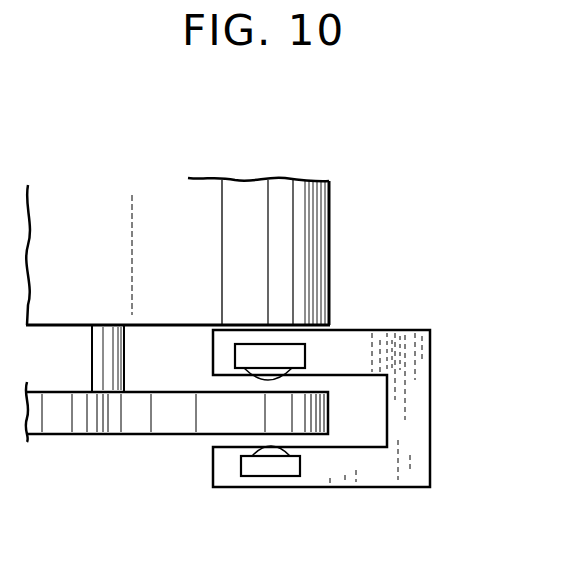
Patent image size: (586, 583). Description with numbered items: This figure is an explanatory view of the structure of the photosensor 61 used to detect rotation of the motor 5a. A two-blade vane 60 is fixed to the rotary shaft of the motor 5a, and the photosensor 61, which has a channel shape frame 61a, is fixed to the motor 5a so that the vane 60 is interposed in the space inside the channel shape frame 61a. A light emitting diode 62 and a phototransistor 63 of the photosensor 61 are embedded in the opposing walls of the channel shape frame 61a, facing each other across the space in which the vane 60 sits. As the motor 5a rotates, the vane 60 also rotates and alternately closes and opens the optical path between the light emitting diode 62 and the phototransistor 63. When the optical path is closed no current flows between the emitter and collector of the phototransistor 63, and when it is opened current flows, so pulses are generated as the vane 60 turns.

The motor 5a is at (260, 185).
The two-blade vane 60 is at (163, 420).
The photosensor 61 is at (430, 413).
The channel shape frame 61a is at (380, 340).
The light emitting diode 62 is at (272, 478).
The phototransistor 63 is at (262, 355).